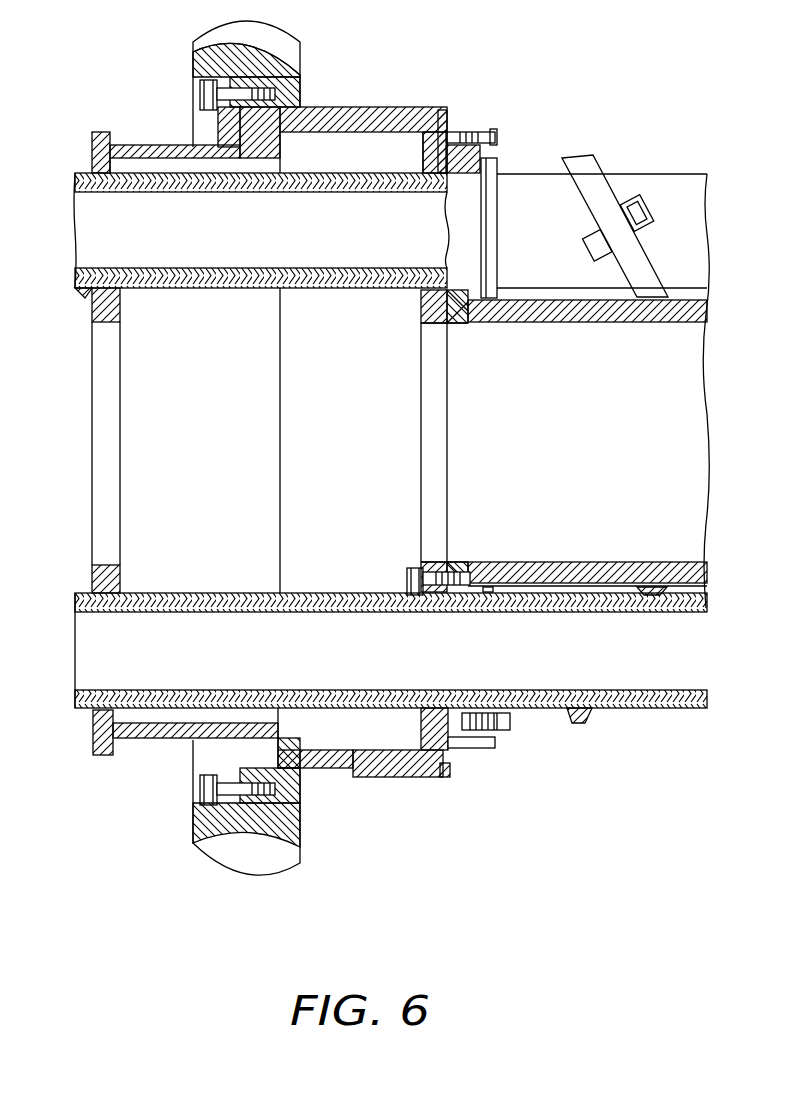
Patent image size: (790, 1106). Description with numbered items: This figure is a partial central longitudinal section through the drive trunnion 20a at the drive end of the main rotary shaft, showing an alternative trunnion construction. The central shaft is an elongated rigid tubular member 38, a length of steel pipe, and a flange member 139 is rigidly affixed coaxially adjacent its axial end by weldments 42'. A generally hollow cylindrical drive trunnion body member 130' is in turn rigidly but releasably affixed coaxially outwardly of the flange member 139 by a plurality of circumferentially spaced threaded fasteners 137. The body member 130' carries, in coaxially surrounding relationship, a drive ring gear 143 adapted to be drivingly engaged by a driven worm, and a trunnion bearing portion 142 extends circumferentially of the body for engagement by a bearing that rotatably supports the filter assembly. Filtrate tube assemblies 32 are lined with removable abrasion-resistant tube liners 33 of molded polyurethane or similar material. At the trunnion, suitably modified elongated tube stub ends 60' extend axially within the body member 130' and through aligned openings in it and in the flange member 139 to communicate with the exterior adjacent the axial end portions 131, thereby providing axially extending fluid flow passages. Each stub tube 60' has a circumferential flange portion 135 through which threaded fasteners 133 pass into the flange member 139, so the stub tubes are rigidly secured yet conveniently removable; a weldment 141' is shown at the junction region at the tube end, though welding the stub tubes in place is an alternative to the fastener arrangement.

The drive trunnion 20a is at (322, 104).
The drive trunnion body member 130' is at (269, 122).
The filtrate tube assemblies 32 is at (620, 172).
The tube liners 33 is at (368, 192).
The circumferential flange portion 135 is at (498, 225).
The pipe end seal 141' is at (62, 318).
The axial end portions 131 is at (115, 308).
The tube stub ends 60' is at (488, 520).
The weldments 42' is at (484, 436).
The flange member 139 is at (458, 315).
The tubular member 38 is at (573, 323).
The threaded fasteners 137 is at (415, 565).
The threaded fasteners 133 is at (508, 713).
The trunnion bearing portion 142 is at (403, 763).
The drive ring gear 143 is at (303, 828).